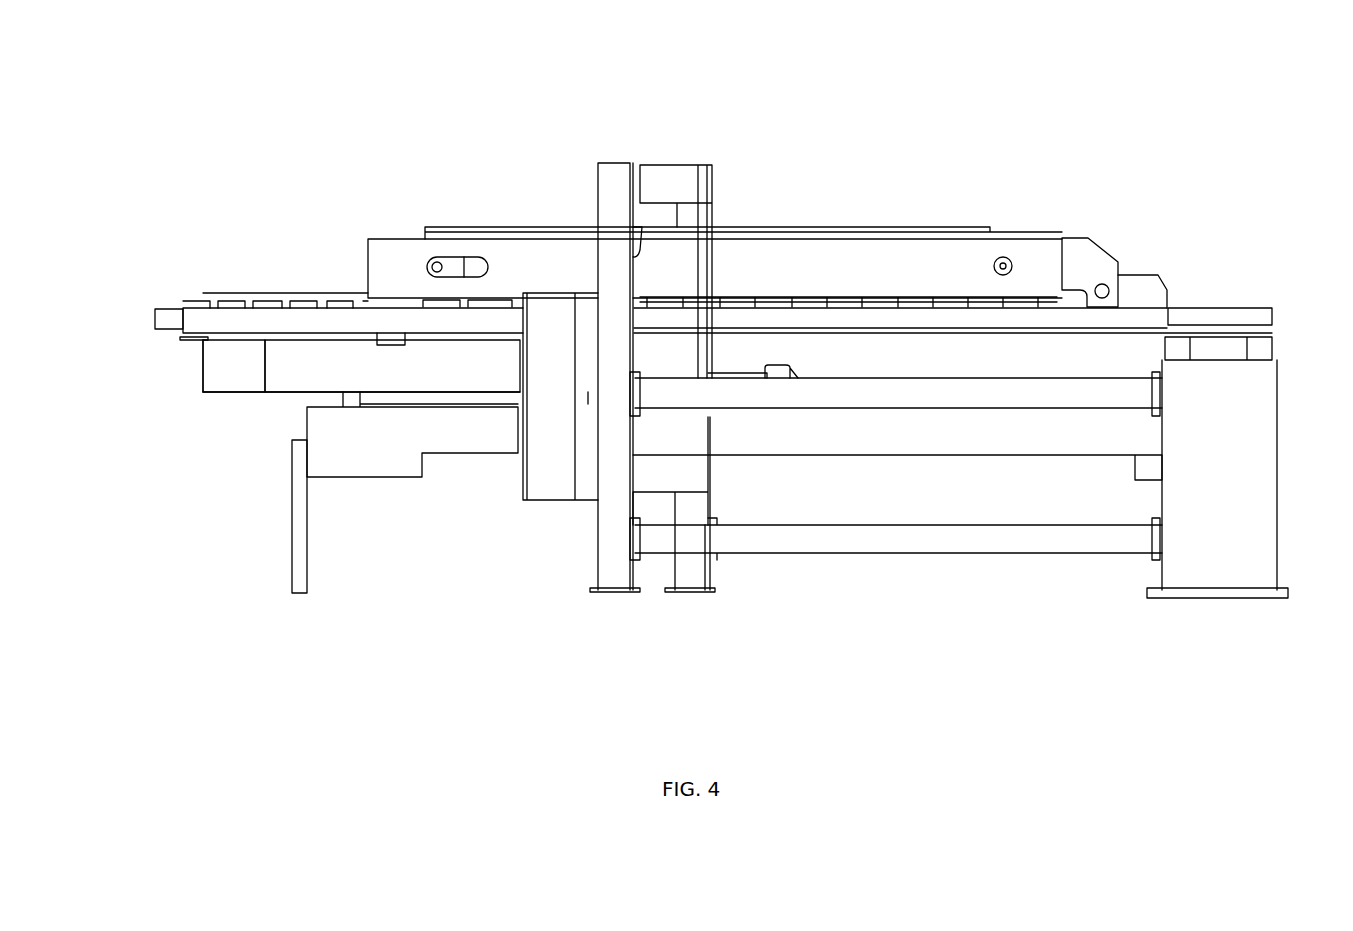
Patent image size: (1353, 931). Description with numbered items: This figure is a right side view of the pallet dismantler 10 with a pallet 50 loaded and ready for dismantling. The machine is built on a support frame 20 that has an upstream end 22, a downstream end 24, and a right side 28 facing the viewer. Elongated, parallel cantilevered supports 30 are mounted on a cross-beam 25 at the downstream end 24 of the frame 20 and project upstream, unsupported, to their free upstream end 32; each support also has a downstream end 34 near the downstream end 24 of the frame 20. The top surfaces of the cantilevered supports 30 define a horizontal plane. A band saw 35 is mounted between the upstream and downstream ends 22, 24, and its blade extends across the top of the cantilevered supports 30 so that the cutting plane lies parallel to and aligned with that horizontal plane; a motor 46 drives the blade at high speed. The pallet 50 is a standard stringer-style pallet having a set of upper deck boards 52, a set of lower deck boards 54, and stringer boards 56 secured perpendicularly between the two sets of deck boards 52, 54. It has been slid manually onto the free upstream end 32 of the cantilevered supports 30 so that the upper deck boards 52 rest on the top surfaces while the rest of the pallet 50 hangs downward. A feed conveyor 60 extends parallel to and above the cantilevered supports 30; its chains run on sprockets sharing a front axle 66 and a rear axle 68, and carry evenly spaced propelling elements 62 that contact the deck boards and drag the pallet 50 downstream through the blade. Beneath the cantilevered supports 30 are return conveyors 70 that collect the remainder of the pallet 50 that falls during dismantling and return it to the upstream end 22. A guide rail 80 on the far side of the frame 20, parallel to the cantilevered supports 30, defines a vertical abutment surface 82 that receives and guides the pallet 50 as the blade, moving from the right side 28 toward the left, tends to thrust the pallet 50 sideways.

The pallet dismantler 10 is at (760, 138).
The support frame 20 is at (1047, 560).
The upstream end 22 is at (292, 495).
The downstream end 24 is at (1277, 478).
The cross-beam 25 is at (1272, 346).
The right side 28 is at (863, 555).
The cantilevered supports 30 is at (900, 322).
The upstream end 32 is at (155, 316).
The downstream end 34 is at (1272, 313).
The band saw 35 is at (553, 506).
The motor 46 is at (790, 370).
The pallet 50 is at (225, 340).
The upper deck boards 52 is at (313, 302).
The lower deck boards 54 is at (390, 348).
The stringer boards 56 is at (193, 315).
The feed conveyor 60 is at (893, 222).
The propelling elements 62 is at (1013, 303).
The front axle 66 is at (437, 265).
The rear axle 68 is at (1003, 262).
The return conveyors 70 is at (370, 462).
The guide rail 80 is at (238, 394).
The vertical abutment surface 82 is at (361, 366).